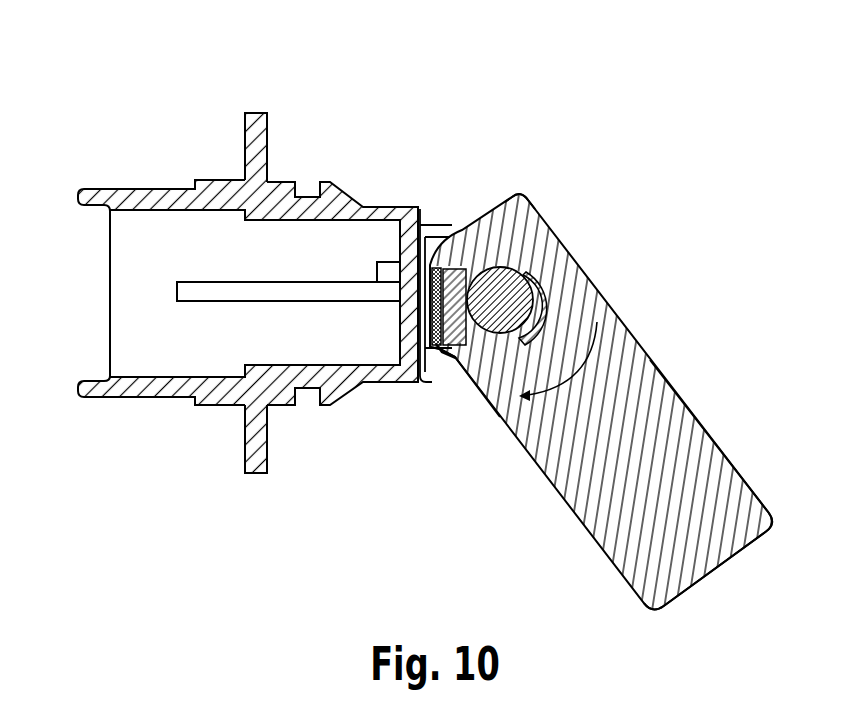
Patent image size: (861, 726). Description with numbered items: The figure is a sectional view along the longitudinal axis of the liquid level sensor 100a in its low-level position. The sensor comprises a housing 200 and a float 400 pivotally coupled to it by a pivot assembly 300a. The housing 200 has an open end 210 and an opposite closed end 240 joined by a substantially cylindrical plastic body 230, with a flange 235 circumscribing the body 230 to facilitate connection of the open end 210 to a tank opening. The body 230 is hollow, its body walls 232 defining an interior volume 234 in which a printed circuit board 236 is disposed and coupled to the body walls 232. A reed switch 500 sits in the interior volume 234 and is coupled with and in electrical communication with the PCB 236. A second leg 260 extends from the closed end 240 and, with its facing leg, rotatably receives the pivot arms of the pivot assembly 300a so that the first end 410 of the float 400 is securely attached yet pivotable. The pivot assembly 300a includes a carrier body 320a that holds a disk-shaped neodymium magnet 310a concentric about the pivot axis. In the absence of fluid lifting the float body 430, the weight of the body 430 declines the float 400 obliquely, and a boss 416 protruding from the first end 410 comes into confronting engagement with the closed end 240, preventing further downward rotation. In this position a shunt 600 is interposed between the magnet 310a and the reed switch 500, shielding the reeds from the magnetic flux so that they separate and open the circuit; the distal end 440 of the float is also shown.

The liquid level sensor 100a is at (569, 103).
The housing 200 is at (307, 138).
The open end 210 is at (110, 243).
The body 230 is at (140, 188).
The body walls 232 is at (166, 394).
The interior volume 234 is at (140, 347).
The flange 235 is at (257, 112).
The printed circuit board 236 is at (177, 291).
The reed switch 500 is at (386, 261).
The closed end 240 is at (424, 222).
The second leg 260 is at (452, 224).
The float 400 is at (674, 270).
The first end 410 is at (533, 204).
The body 430 is at (726, 446).
The handle distal end 440 is at (722, 576).
The boss 416 is at (429, 362).
The body 320a is at (478, 390).
The shunt 600 is at (459, 361).
The pivot assembly 300a is at (557, 283).
The magnet 310a is at (518, 283).